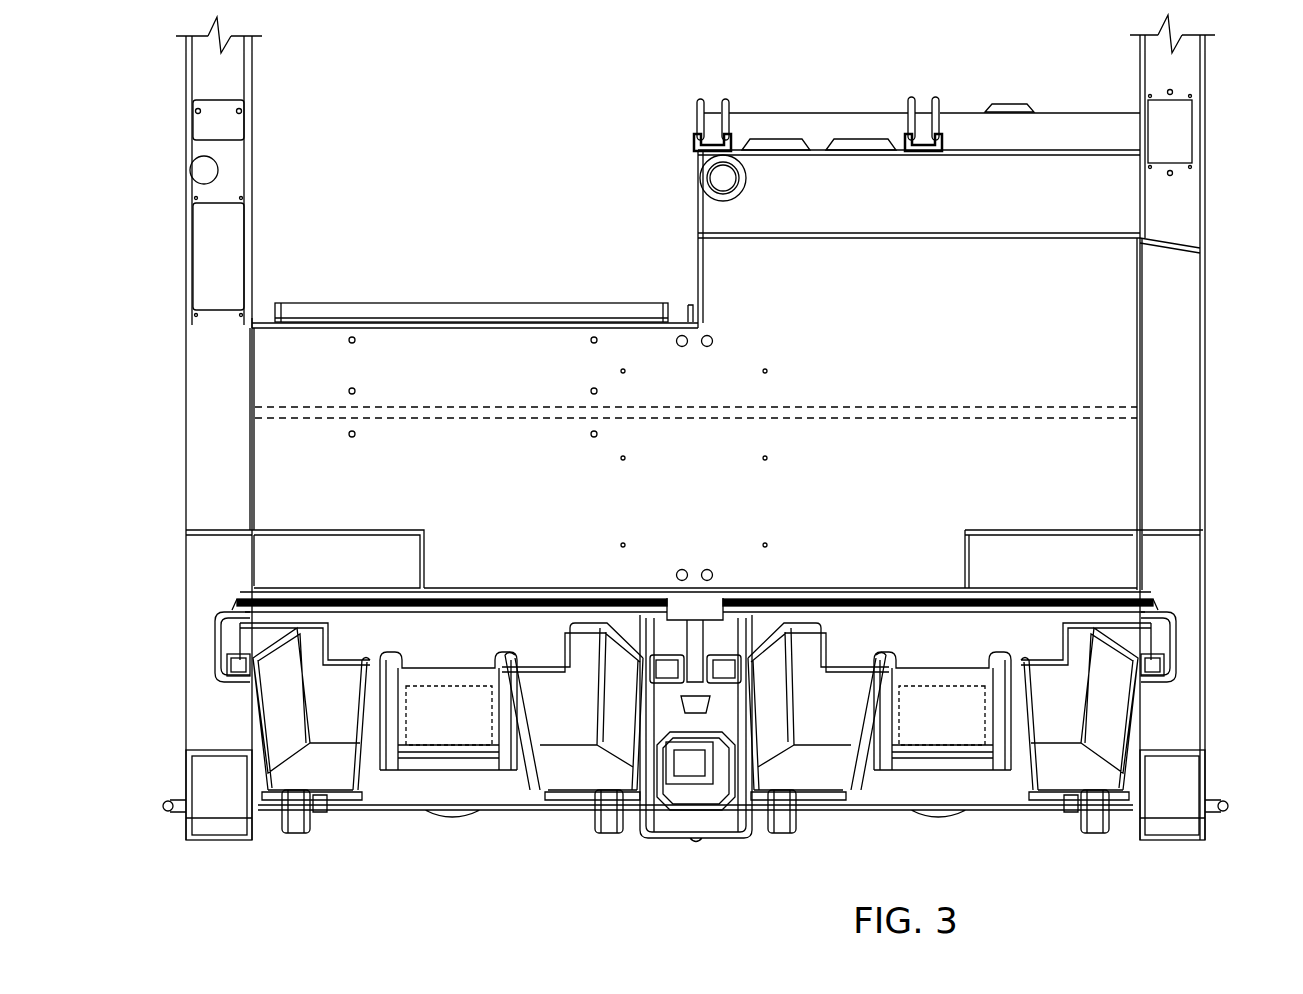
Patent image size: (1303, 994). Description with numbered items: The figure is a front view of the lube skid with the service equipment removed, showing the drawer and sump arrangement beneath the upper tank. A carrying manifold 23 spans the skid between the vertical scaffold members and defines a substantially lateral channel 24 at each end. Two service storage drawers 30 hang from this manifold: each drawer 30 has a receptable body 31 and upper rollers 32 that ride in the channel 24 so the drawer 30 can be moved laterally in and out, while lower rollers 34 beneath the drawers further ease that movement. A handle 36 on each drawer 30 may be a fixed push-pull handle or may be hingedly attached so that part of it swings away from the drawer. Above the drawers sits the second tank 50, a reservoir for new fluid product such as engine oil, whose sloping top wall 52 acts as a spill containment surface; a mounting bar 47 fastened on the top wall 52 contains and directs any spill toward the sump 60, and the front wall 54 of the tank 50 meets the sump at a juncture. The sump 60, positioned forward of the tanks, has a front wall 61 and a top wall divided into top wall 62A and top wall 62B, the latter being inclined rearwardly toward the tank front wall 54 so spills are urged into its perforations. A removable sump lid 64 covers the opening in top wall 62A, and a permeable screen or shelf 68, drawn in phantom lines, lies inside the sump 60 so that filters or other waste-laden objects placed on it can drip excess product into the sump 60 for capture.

The carrying manifold 23 is at (1172, 612).
The lateral channel 24 is at (1175, 630).
The service storage drawer 30 is at (872, 647).
The receptable body 31 is at (1060, 712).
The upper roller 32 is at (712, 862).
The lower roller 34 is at (1118, 864).
The handle 36 is at (973, 838).
The mounting bar 47 is at (940, 108).
The second tank 50 is at (934, 215).
The top wall 52 is at (818, 122).
The front wall 54 is at (1088, 178).
The sump 60 is at (860, 318).
The front wall 61 is at (1122, 503).
The top wall 62A is at (263, 322).
The top wall 62B is at (1090, 238).
The sump lid 64 is at (545, 318).
The permeable screen or shelf 68 is at (386, 413).